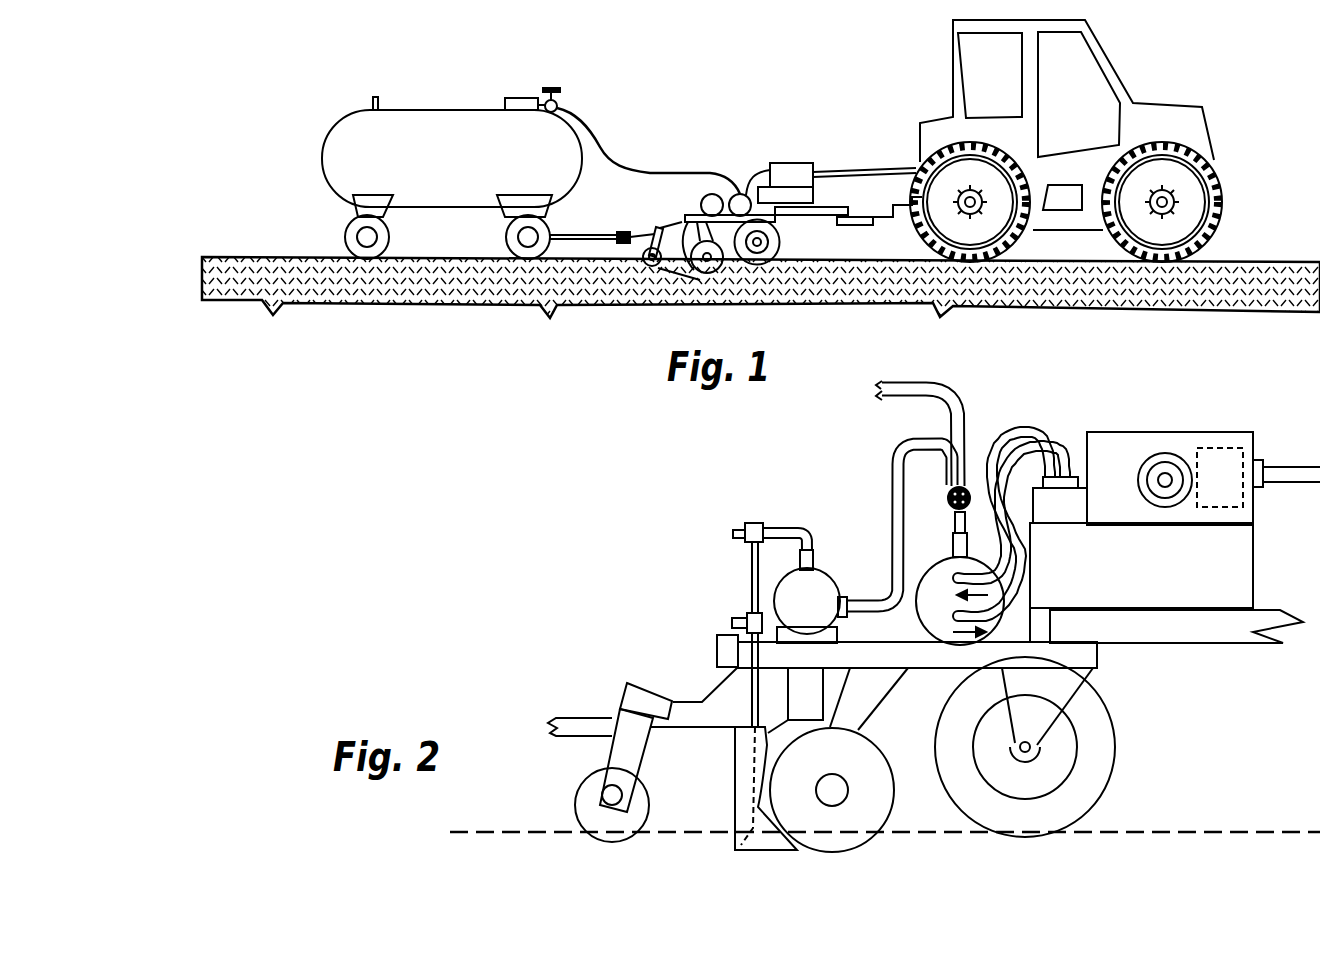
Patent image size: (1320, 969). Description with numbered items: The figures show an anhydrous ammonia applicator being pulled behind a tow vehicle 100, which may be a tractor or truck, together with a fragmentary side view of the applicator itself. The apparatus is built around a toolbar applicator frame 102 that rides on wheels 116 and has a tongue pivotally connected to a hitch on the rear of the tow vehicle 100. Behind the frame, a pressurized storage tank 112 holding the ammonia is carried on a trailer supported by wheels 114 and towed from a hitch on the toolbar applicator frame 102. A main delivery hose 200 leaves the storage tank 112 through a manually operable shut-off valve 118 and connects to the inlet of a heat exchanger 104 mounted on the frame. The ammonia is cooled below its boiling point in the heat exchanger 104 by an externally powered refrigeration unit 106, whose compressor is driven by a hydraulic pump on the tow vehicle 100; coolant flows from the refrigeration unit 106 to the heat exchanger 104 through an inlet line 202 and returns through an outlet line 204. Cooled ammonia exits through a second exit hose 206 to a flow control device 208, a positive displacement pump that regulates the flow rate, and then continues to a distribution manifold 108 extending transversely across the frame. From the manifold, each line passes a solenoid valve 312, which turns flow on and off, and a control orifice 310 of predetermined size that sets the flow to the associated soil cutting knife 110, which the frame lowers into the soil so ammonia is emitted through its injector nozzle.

In FIG. 1, the tow vehicle 100 is at (1150, 115).
In FIG. 1, the toolbar applicator frame 102 is at (736, 199).
In FIG. 1, the heat exchanger 104 is at (744, 192).
In FIG. 2, the heat exchanger 104 is at (933, 590).
In FIG. 1, the refrigeration unit 106 is at (802, 170).
In FIG. 2, the refrigeration unit 106 is at (1145, 443).
In FIG. 1, the distribution manifold 108 is at (710, 196).
In FIG. 2, the distribution manifold 108 is at (792, 600).
In FIG. 1, the soil cutting knife 110 is at (685, 268).
In FIG. 2, the soil cutting knife 110 is at (750, 840).
In FIG. 1, the storage tank 112 is at (413, 128).
In FIG. 1, the wheels 114 is at (340, 232).
In FIG. 1, the wheels 116 is at (767, 253).
In FIG. 2, the wheels 116 is at (1037, 817).
In FIG. 1, the shut-off valve 118 is at (558, 83).
In FIG. 1, the main delivery hose 200 is at (617, 157).
In FIG. 2, the main delivery hose 200 is at (942, 397).
In FIG. 2, the inlet line 202 is at (1057, 442).
In FIG. 2, the outlet line 204 is at (1027, 430).
In FIG. 2, the second exit hose 206 is at (905, 448).
In FIG. 2, the flow control device 208 is at (950, 540).
In FIG. 2, the control orifice 310 is at (727, 622).
In FIG. 2, the solenoid valve 312 is at (743, 520).